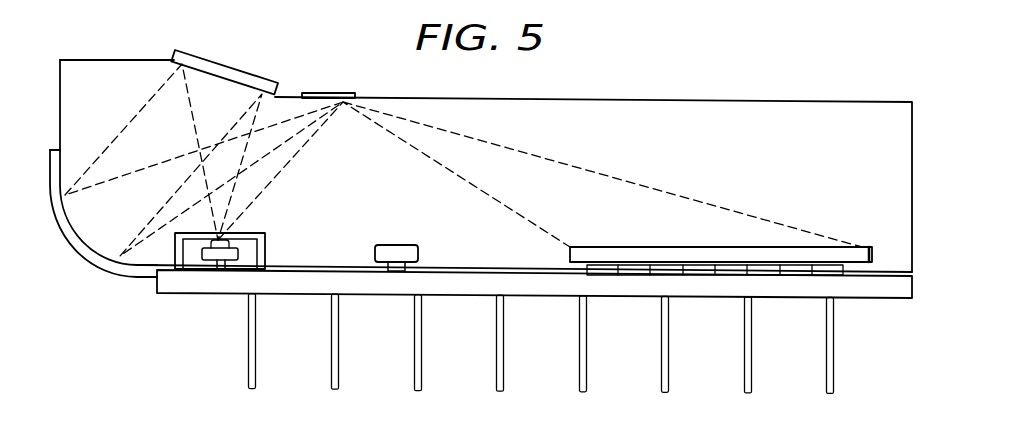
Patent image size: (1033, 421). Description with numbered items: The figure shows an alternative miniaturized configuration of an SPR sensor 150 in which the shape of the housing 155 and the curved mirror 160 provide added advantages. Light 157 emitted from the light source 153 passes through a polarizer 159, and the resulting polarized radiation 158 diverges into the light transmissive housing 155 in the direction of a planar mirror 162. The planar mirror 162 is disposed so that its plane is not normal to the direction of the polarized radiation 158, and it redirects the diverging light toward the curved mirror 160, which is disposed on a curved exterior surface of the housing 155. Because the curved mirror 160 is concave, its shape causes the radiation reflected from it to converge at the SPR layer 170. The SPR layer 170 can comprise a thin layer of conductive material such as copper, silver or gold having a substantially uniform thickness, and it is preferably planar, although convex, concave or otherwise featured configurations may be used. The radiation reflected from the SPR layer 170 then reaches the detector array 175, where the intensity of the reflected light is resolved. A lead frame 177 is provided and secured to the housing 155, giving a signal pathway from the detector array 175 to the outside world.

The SPR sensor 150 is at (792, 69).
The light source 153 is at (219, 270).
The housing 155 is at (703, 113).
The light 157 is at (230, 246).
The polarized radiation 158 is at (243, 173).
The polarizer 159 is at (252, 233).
The curved mirror 160 is at (95, 263).
The planar mirror 162 is at (200, 57).
The SPR layer 170 is at (313, 93).
The detector array 175 is at (590, 247).
The lead frame 177 is at (855, 290).